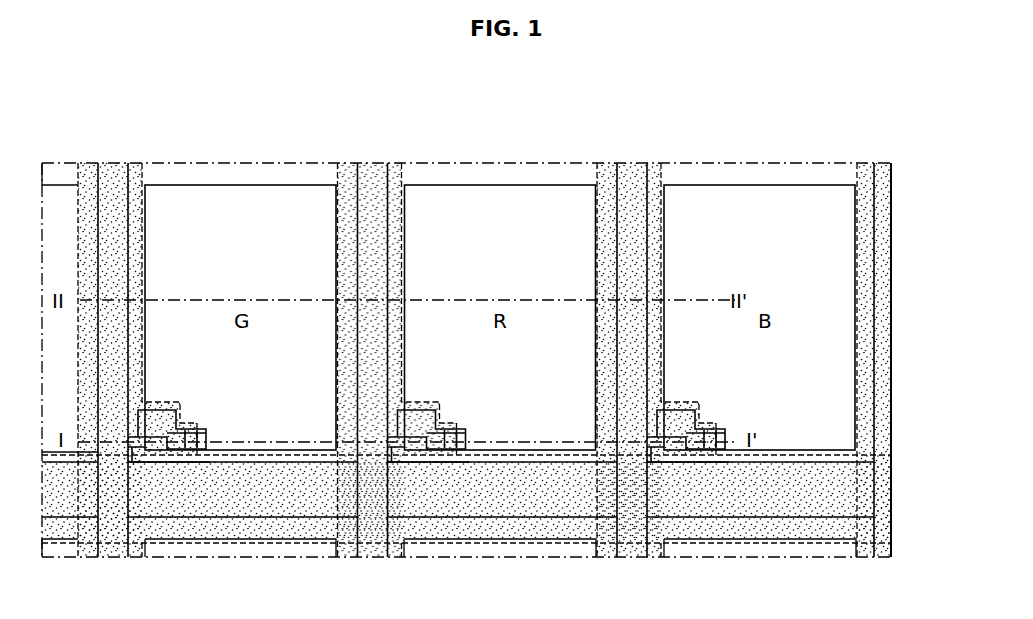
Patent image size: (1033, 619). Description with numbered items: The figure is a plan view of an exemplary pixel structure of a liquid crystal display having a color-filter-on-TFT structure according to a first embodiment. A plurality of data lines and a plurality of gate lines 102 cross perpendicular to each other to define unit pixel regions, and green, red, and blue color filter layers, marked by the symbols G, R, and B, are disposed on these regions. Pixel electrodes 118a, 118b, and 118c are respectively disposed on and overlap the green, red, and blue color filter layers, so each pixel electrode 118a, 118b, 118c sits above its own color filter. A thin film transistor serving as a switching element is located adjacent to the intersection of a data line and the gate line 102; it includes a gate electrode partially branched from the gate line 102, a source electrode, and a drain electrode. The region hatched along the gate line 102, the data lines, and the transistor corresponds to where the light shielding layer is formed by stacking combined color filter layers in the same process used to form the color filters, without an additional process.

The gate line 102 is at (880, 489).
The pixel electrode 118a is at (235, 197).
The pixel electrode 118b is at (500, 281).
The pixel electrode 118c is at (759, 281).